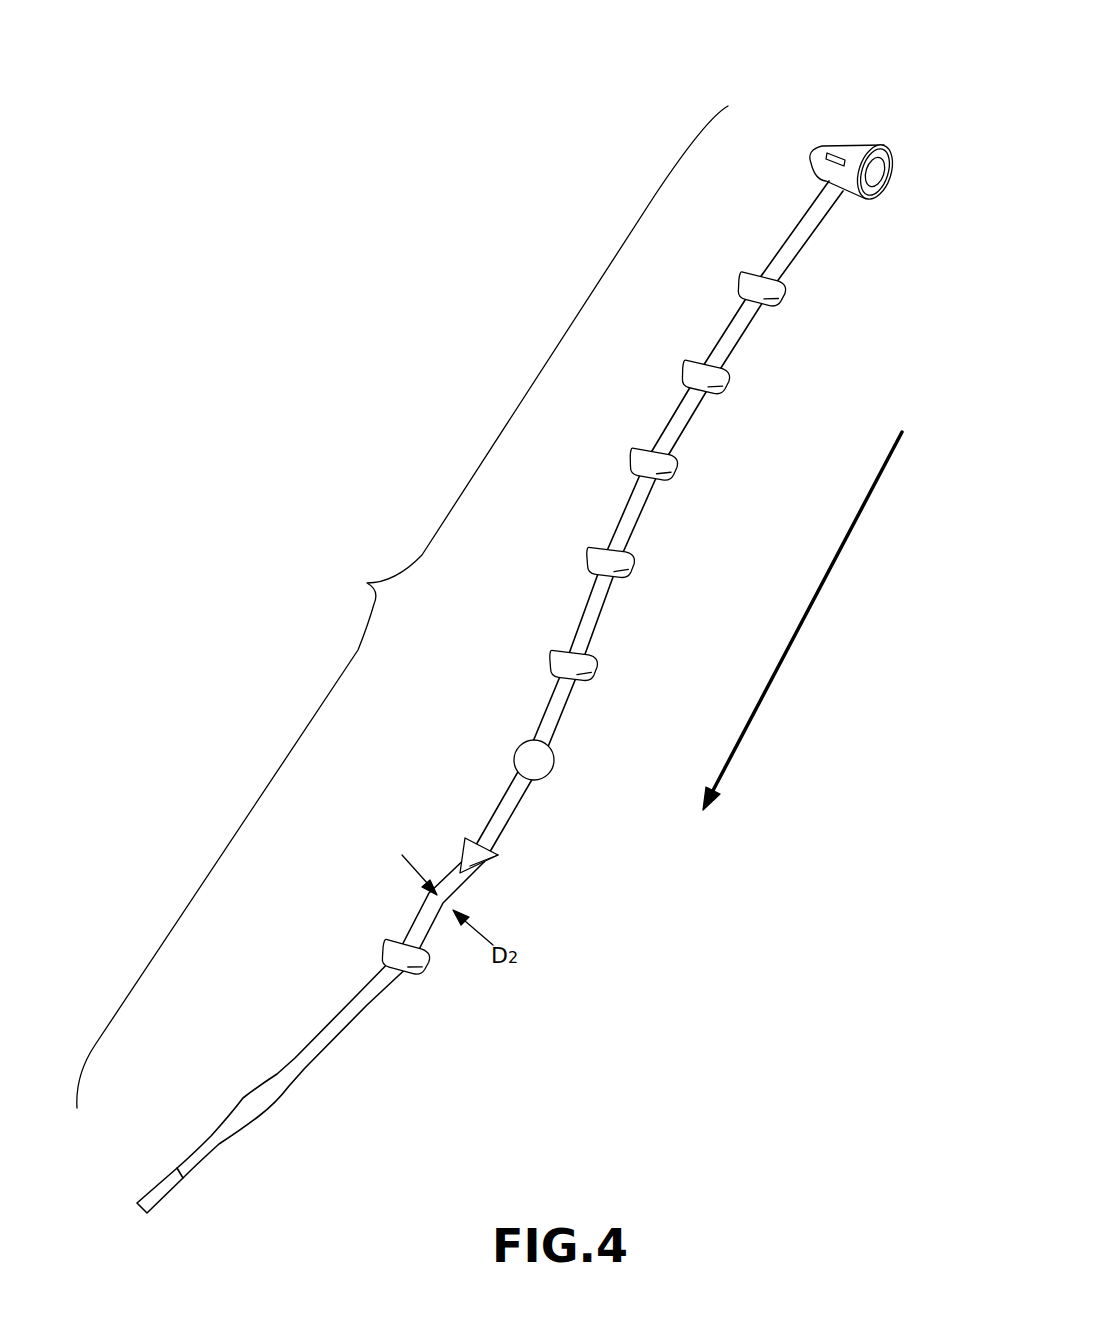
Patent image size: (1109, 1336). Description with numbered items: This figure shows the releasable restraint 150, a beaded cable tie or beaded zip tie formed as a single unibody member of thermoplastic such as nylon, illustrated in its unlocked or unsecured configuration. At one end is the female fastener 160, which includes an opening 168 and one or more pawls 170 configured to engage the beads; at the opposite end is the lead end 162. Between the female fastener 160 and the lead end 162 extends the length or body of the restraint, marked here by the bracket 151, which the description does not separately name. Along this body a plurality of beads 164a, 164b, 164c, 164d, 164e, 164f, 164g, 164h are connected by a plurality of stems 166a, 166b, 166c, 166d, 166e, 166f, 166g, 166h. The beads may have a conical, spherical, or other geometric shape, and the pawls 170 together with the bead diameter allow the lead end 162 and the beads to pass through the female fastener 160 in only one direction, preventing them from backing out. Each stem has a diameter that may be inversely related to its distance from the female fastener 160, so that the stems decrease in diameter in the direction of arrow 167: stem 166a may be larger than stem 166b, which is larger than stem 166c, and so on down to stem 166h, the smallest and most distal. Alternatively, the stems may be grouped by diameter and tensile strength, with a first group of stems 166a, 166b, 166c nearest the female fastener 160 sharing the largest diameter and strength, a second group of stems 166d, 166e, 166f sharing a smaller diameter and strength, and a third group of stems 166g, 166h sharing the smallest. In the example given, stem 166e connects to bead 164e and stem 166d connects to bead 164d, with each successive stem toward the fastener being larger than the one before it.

The releasable restraint 150 is at (746, 74).
The catheter body 151 is at (402, 607).
The female fastener 160 is at (881, 140).
The lead end 162 is at (180, 1181).
The bead 164a is at (790, 293).
The bead 164b is at (735, 384).
The bead 164c is at (680, 478).
The bead 164d is at (640, 572).
The bead 164e is at (600, 672).
The bead 164f is at (558, 770).
The bead 164g is at (500, 866).
The bead 164h is at (428, 968).
The stem 166a is at (777, 270).
The stem 166b is at (718, 352).
The stem 166c is at (668, 440).
The stem 166d is at (610, 547).
The stem 166e is at (575, 642).
The stem 166f is at (535, 750).
The stem 166g is at (488, 830).
The stem 166h is at (412, 945).
The arrow 167 is at (833, 582).
The opening 168 is at (889, 184).
The pawls 170 is at (828, 152).